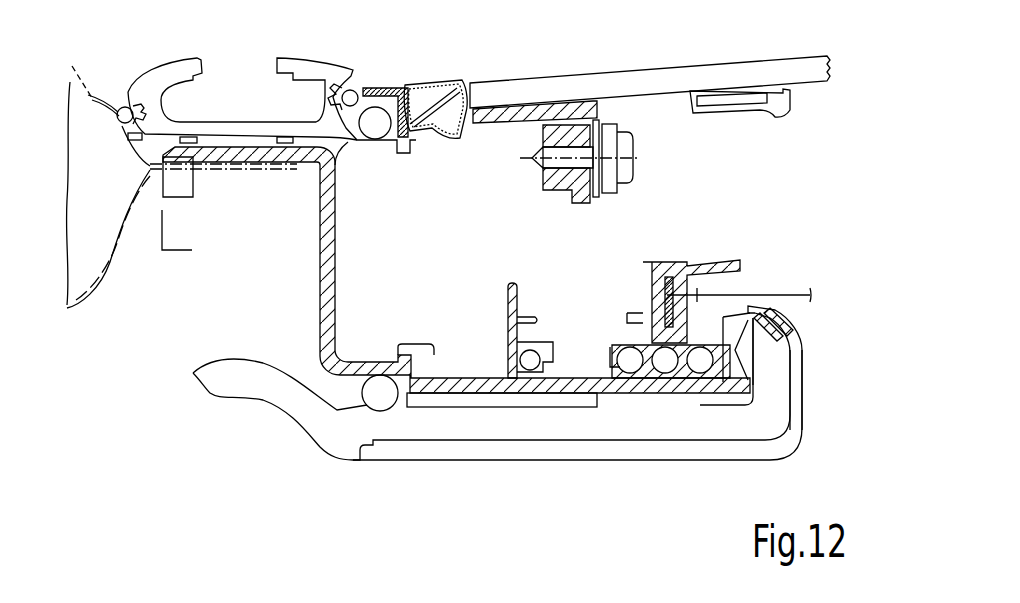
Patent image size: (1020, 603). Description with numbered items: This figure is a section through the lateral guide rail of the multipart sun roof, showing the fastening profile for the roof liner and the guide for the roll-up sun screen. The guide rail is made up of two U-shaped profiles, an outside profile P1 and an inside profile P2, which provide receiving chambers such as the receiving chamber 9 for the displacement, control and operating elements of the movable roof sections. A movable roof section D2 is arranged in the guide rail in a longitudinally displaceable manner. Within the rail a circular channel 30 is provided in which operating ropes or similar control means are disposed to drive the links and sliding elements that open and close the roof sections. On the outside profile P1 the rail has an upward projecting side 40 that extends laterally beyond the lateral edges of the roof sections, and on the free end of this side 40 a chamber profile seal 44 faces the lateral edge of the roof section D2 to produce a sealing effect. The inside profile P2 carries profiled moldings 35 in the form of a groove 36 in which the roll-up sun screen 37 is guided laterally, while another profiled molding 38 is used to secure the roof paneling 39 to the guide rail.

The upward projecting side 40 is at (327, 272).
The circular channel 30 is at (376, 107).
The chamber profile seal 44 is at (443, 82).
The roof section D2 is at (630, 71).
The outside U-shaped profile P1 is at (337, 367).
The inside U-shaped profile P2 is at (547, 380).
The profiled molding 35 is at (660, 262).
The groove 36 is at (663, 290).
The roll-up sun screen 37 is at (763, 292).
The profiled molding 38 is at (790, 320).
The roof paneling 39 is at (777, 428).
The receiving chamber 9 is at (578, 345).